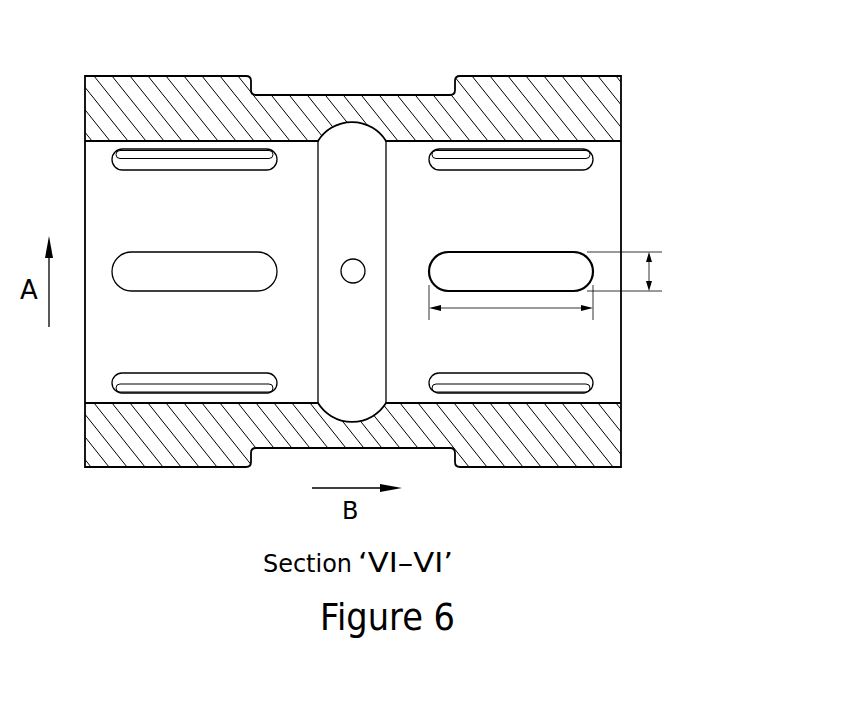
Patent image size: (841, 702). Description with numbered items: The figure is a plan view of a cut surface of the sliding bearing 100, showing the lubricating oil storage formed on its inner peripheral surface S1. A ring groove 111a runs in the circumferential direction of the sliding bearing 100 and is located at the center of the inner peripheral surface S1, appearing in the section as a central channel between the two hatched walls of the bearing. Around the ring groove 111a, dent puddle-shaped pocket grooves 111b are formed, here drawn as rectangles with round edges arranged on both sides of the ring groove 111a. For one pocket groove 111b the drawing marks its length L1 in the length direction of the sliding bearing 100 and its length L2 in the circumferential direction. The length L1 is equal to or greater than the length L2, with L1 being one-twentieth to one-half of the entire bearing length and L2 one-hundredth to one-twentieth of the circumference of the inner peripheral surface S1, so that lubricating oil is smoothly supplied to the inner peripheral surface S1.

The sliding bearing 100 is at (636, 117).
The ring groove 111a is at (352, 150).
The pocket groove 111b is at (553, 267).
The inner peripheral surface S1 is at (599, 174).
The length of the pocket groove in the length direction L1 is at (512, 310).
The length of the pocket groove in the circumferential direction L2 is at (653, 269).